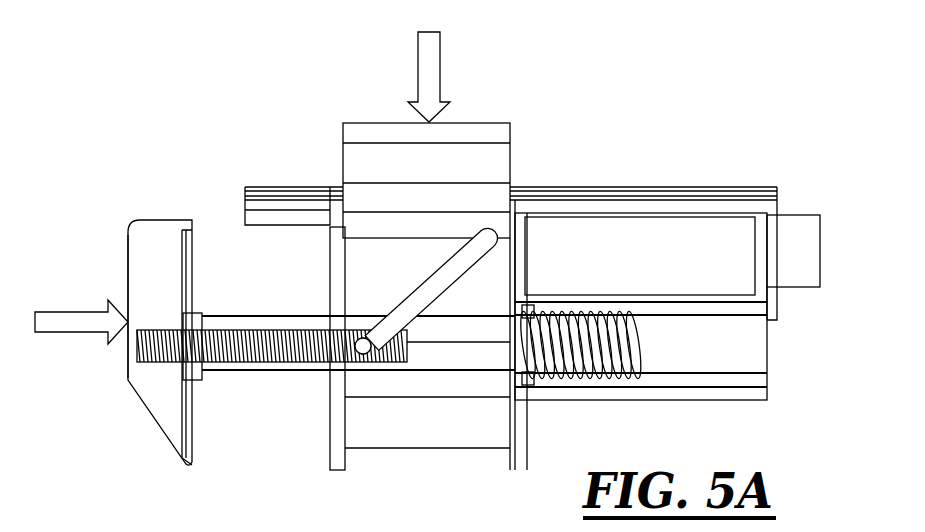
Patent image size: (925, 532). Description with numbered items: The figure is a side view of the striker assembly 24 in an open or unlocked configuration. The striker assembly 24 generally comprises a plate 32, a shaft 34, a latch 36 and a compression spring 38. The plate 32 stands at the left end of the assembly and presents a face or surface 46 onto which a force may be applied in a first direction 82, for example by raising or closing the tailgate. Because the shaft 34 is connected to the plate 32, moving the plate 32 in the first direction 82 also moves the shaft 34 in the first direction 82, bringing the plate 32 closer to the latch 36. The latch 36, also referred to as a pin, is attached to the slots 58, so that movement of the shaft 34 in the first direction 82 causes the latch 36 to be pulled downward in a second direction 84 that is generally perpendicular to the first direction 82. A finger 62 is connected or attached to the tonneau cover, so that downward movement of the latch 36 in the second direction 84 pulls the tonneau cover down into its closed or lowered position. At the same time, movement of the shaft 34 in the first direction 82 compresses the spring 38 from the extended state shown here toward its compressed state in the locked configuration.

The striker assembly 24 is at (193, 110).
The plate 32 is at (158, 213).
The face or surface 46 is at (127, 262).
The first direction 82 is at (60, 327).
The second direction 84 is at (428, 58).
The finger 62 is at (497, 157).
The latch 36 is at (362, 354).
The shaft 34 is at (254, 377).
The slots 58 is at (415, 298).
The compression spring 38 is at (611, 388).